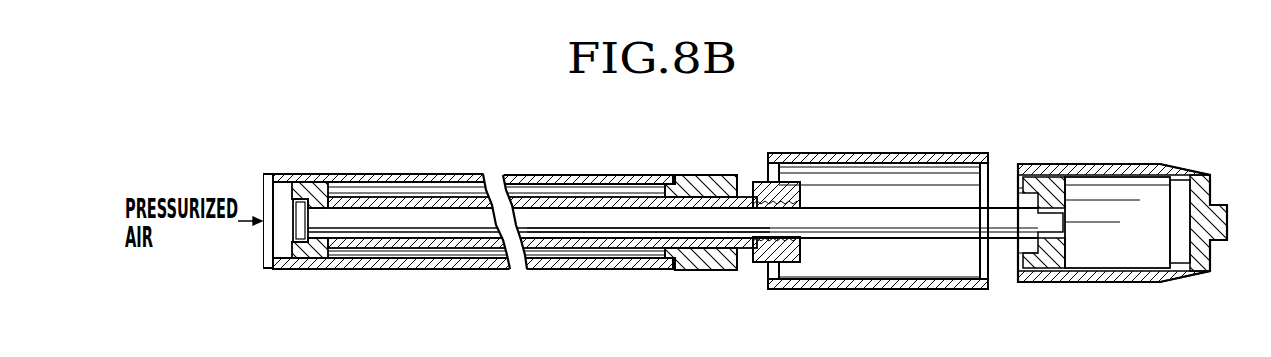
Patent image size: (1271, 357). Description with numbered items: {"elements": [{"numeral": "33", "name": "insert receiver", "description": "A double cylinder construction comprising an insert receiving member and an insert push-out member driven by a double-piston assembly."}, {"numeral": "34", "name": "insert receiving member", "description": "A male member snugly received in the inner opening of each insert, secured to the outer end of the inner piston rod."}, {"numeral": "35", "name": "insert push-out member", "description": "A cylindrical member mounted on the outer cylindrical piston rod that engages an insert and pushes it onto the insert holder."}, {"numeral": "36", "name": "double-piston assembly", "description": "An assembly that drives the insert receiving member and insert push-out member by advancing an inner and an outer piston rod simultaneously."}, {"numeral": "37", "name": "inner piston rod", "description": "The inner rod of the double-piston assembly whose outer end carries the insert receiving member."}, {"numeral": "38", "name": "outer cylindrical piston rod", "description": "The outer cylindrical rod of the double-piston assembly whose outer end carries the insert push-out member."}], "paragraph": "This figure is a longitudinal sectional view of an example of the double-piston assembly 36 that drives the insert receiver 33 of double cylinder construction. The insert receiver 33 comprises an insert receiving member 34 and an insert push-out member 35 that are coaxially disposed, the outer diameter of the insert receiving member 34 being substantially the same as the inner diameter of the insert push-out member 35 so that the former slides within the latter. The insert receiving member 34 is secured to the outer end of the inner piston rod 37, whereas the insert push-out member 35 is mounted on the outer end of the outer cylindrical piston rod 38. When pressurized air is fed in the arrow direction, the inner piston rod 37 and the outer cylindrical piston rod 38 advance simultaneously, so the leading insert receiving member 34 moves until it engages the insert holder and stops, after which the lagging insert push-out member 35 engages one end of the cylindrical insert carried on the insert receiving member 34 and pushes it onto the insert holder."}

The cylinder housing 33 is at (876, 196).
The end cap / piston head 34 is at (1112, 170).
The cylinder liner 35 is at (840, 157).
The guide block 36 is at (705, 257).
The piston rod 37 is at (589, 218).
The inner tube 38 is at (623, 203).